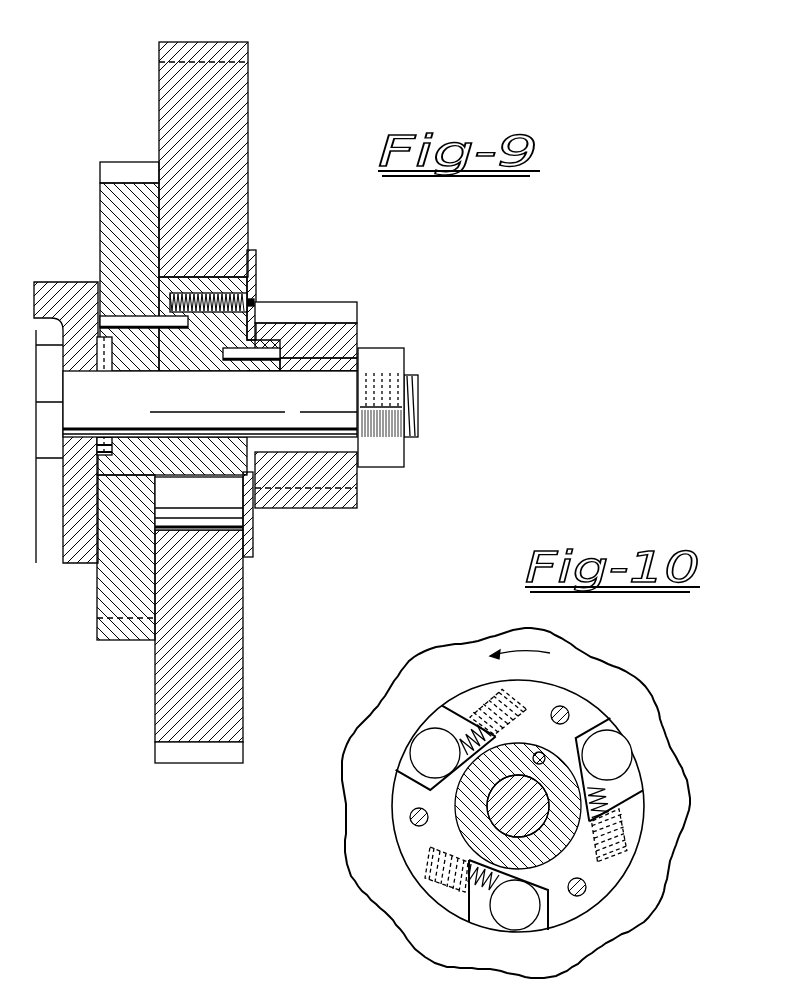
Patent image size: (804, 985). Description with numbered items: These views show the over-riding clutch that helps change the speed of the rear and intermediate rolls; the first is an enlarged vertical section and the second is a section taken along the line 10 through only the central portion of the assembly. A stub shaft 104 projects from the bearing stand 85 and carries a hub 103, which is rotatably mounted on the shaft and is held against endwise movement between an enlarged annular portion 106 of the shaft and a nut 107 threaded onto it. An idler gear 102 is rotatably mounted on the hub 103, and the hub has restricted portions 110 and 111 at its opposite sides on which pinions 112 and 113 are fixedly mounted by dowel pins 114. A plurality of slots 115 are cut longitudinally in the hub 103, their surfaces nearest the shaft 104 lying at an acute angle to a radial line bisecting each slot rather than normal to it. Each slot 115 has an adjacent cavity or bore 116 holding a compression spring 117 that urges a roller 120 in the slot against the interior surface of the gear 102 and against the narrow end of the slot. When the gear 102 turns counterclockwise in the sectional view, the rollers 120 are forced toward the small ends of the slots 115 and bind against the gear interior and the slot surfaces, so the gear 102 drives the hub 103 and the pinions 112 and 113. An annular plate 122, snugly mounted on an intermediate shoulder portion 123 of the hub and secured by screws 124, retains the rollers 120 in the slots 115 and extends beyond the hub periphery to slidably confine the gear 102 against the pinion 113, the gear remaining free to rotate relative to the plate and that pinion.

In FIG. 9, the section line 10- 10 is at (248, 35).
In FIG. 9, the bearing stand 85 is at (68, 563).
In FIG. 9, the idler gear 102 is at (244, 108).
In FIG. 10, the idler gear 102 is at (667, 893).
In FIG. 9, the hub 103 is at (197, 276).
In FIG. 10, the hub 103 is at (556, 698).
In FIG. 9, the stub shaft 104 is at (165, 374).
In FIG. 10, the stub shaft 104 is at (518, 806).
In FIG. 9, the enlarged annular portion 106 is at (114, 420).
In FIG. 9, the nut 107 is at (403, 364).
In FIG. 9, the restricted portion 110 is at (304, 370).
In FIG. 10, the restricted portion 110 is at (548, 846).
In FIG. 9, the restricted portion 111 is at (125, 320).
In FIG. 9, the pinion 112 is at (352, 332).
In FIG. 9, the pinion 113 is at (100, 230).
In FIG. 9, the dowel pin 114 is at (120, 328).
In FIG. 10, the dowel pin 114 is at (546, 757).
In FIG. 10, the slot 115 is at (447, 710).
In FIG. 10, the cavity or bore 116 is at (533, 670).
In FIG. 10, the compression spring 117 is at (458, 738).
In FIG. 9, the roller 120 is at (237, 518).
In FIG. 10, the roller 120 is at (434, 772).
In FIG. 9, the annular plate 122 is at (256, 288).
In FIG. 9, the intermediate shoulder portion 123 is at (250, 470).
In FIG. 9, the screw 124 is at (255, 303).
In FIG. 10, the screw 124 is at (560, 724).